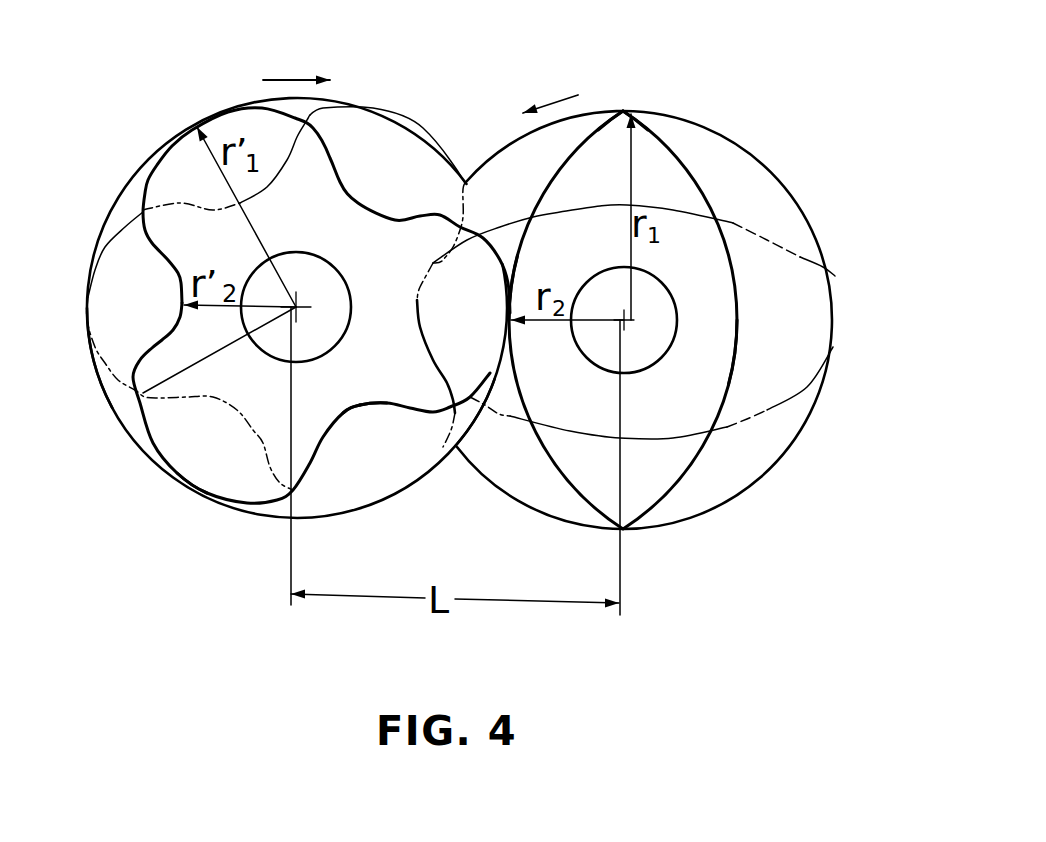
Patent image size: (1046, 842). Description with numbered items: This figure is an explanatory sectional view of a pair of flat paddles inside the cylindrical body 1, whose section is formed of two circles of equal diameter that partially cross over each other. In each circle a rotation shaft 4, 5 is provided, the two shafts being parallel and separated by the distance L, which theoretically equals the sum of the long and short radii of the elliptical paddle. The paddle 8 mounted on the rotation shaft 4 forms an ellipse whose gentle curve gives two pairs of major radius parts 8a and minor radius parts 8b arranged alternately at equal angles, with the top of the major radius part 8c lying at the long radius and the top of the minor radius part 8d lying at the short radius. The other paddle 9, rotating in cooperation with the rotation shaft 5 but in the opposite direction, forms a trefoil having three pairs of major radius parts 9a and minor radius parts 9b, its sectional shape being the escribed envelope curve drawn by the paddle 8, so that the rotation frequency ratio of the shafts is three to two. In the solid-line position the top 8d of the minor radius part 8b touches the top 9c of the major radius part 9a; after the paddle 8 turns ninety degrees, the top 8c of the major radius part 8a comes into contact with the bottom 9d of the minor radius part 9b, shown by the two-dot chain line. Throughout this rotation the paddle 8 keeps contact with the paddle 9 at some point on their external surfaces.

The cylindrical body 1 is at (456, 174).
The rotation shaft 4 is at (660, 363).
The rotation shaft 5 is at (147, 393).
The paddle 8 is at (743, 192).
The major radius part 8a is at (662, 113).
The minor radius part 8b is at (536, 303).
The top of the major radius part 8c is at (637, 143).
The top of the minor radius part 8d is at (745, 318).
The paddle 9 is at (340, 155).
The major radius part 9a is at (465, 450).
The minor radius part 9b is at (345, 398).
The top of the major radius part 9c is at (187, 490).
The bottom of the minor radius part 9d is at (361, 413).